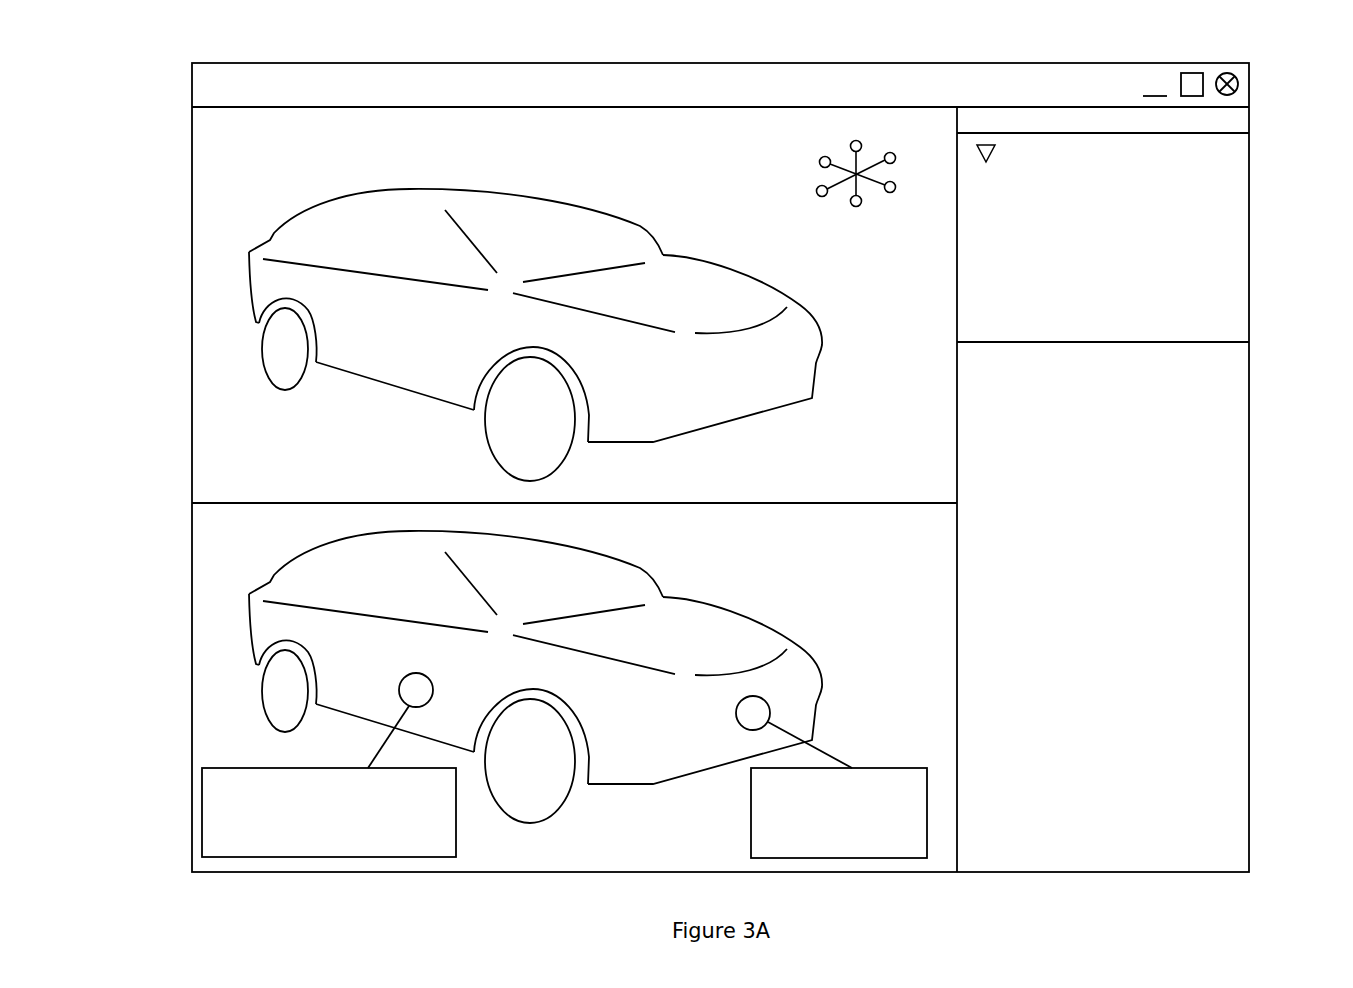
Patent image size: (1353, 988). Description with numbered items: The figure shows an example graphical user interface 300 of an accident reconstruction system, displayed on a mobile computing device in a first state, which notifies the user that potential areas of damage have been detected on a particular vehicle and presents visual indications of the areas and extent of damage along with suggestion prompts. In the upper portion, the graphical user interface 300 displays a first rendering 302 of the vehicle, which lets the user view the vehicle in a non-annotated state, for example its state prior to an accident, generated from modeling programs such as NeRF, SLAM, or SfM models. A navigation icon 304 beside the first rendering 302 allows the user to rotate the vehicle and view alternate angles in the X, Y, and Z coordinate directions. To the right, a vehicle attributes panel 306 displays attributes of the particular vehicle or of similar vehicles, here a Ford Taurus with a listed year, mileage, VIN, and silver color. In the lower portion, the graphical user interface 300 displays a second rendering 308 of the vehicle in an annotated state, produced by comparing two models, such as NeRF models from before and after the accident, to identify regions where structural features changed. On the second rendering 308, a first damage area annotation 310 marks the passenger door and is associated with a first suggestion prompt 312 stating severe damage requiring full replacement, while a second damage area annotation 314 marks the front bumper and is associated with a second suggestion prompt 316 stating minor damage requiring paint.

The graphical user interface 300 is at (1088, 67).
The first rendering of the vehicle 302 is at (641, 222).
The navigation icon 304 is at (868, 204).
The vehicle attributes panel 306 is at (1240, 205).
The second rendering of the vehicle 308 is at (677, 600).
The first damage area annotation 310 is at (433, 682).
The first suggestion prompt 312 is at (457, 786).
The second damage area annotation 314 is at (770, 708).
The second suggestion prompt 316 is at (928, 808).